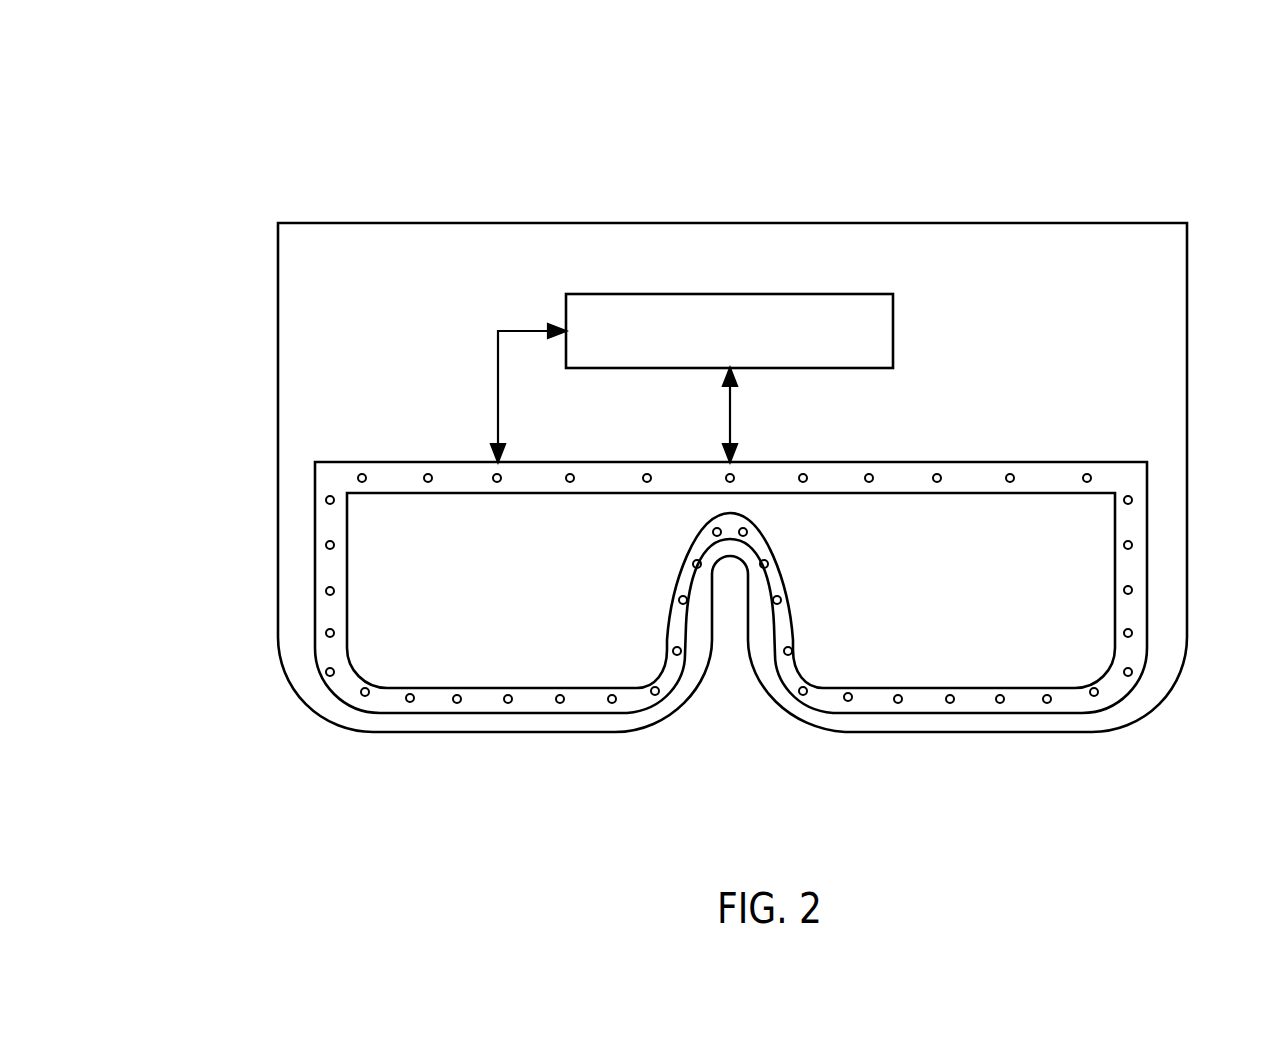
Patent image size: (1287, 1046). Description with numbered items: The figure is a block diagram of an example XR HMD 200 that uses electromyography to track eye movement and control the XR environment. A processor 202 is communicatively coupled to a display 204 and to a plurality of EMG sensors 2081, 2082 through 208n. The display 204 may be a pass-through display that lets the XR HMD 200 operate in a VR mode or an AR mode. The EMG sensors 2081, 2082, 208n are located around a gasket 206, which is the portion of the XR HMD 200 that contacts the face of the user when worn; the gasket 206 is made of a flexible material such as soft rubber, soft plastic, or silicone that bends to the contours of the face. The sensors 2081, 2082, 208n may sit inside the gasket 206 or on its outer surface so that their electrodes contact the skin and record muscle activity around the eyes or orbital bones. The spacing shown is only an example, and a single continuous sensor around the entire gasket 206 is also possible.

The XR HMD 200 is at (132, 32).
The processor 202 is at (715, 355).
The display 204 is at (1093, 612).
The gasket 206 is at (1066, 460).
The EMG sensor 2081 is at (327, 497).
The EMG sensor 2082 is at (362, 473).
The EMG sensor 208n is at (327, 550).